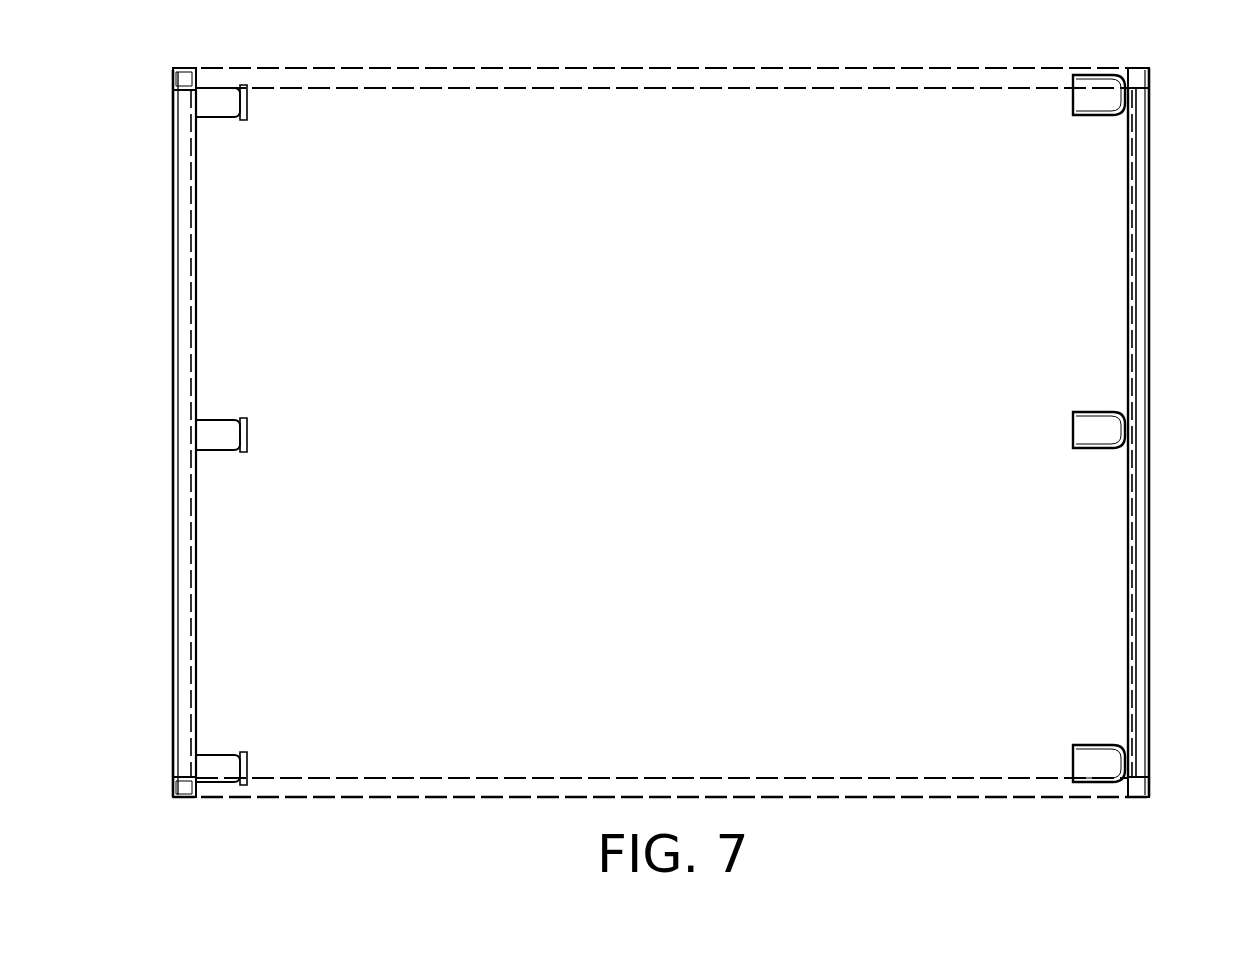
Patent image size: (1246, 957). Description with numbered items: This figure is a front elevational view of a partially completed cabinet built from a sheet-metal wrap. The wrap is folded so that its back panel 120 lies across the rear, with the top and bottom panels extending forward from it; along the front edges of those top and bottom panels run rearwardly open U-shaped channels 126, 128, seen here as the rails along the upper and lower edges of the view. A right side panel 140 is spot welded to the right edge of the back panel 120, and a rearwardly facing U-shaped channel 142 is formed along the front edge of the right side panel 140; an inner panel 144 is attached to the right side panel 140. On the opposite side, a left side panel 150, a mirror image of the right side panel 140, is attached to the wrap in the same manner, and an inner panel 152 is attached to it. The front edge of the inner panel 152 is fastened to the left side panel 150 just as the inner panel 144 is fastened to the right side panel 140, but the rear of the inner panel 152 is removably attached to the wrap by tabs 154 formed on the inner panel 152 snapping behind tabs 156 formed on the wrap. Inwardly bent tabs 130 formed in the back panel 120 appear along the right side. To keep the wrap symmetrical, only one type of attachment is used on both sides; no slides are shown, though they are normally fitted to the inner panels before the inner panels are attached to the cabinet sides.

The back panel 120 is at (653, 155).
The U-shaped channel 126 is at (540, 78).
The U-shaped channel 128 is at (537, 785).
The inwardly bent tabs 130 is at (1095, 100).
The right side panel 140 is at (1150, 463).
The U-shaped channel 142 is at (1142, 663).
The inner panel 144 is at (1128, 557).
The left side panel 150 is at (185, 630).
The inner panel 152 is at (197, 650).
The tabs 154 is at (220, 110).
The tabs 156 is at (247, 100).